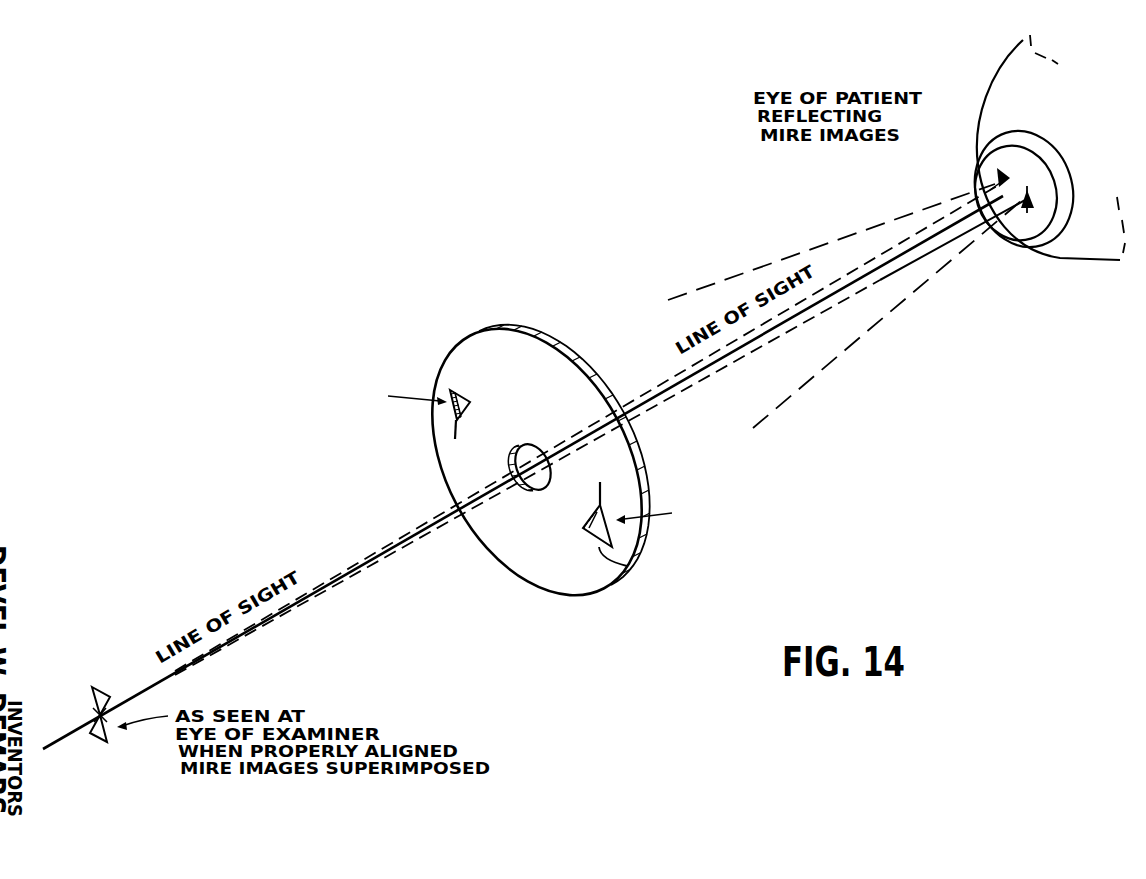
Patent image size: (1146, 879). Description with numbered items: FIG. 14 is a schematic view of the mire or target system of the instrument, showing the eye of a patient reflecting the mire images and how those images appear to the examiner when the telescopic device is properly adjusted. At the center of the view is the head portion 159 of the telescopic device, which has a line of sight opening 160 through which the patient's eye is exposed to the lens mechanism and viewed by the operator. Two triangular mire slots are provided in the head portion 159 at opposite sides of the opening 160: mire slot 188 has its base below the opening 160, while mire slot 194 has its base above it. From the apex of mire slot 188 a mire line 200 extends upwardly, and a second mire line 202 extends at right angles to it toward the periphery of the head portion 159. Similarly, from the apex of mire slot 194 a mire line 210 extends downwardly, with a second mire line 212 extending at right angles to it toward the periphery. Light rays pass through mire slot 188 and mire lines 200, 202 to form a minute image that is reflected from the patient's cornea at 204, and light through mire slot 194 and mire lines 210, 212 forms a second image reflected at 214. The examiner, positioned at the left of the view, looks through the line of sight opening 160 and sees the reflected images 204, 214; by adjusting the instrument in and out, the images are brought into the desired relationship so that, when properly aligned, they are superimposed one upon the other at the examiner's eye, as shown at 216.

The head portion 159 is at (550, 394).
The line of sight opening 160 is at (535, 490).
The mire slot 188 is at (654, 526).
The mire slot 194 is at (426, 394).
The mire line 200 is at (601, 497).
The second mire line 202 is at (611, 513).
The reflected image 204 is at (1025, 214).
The mire line 210 is at (458, 428).
The second mire line 212 is at (452, 418).
The reflected image 214 is at (995, 177).
The superimposed mire images 216 is at (86, 702).